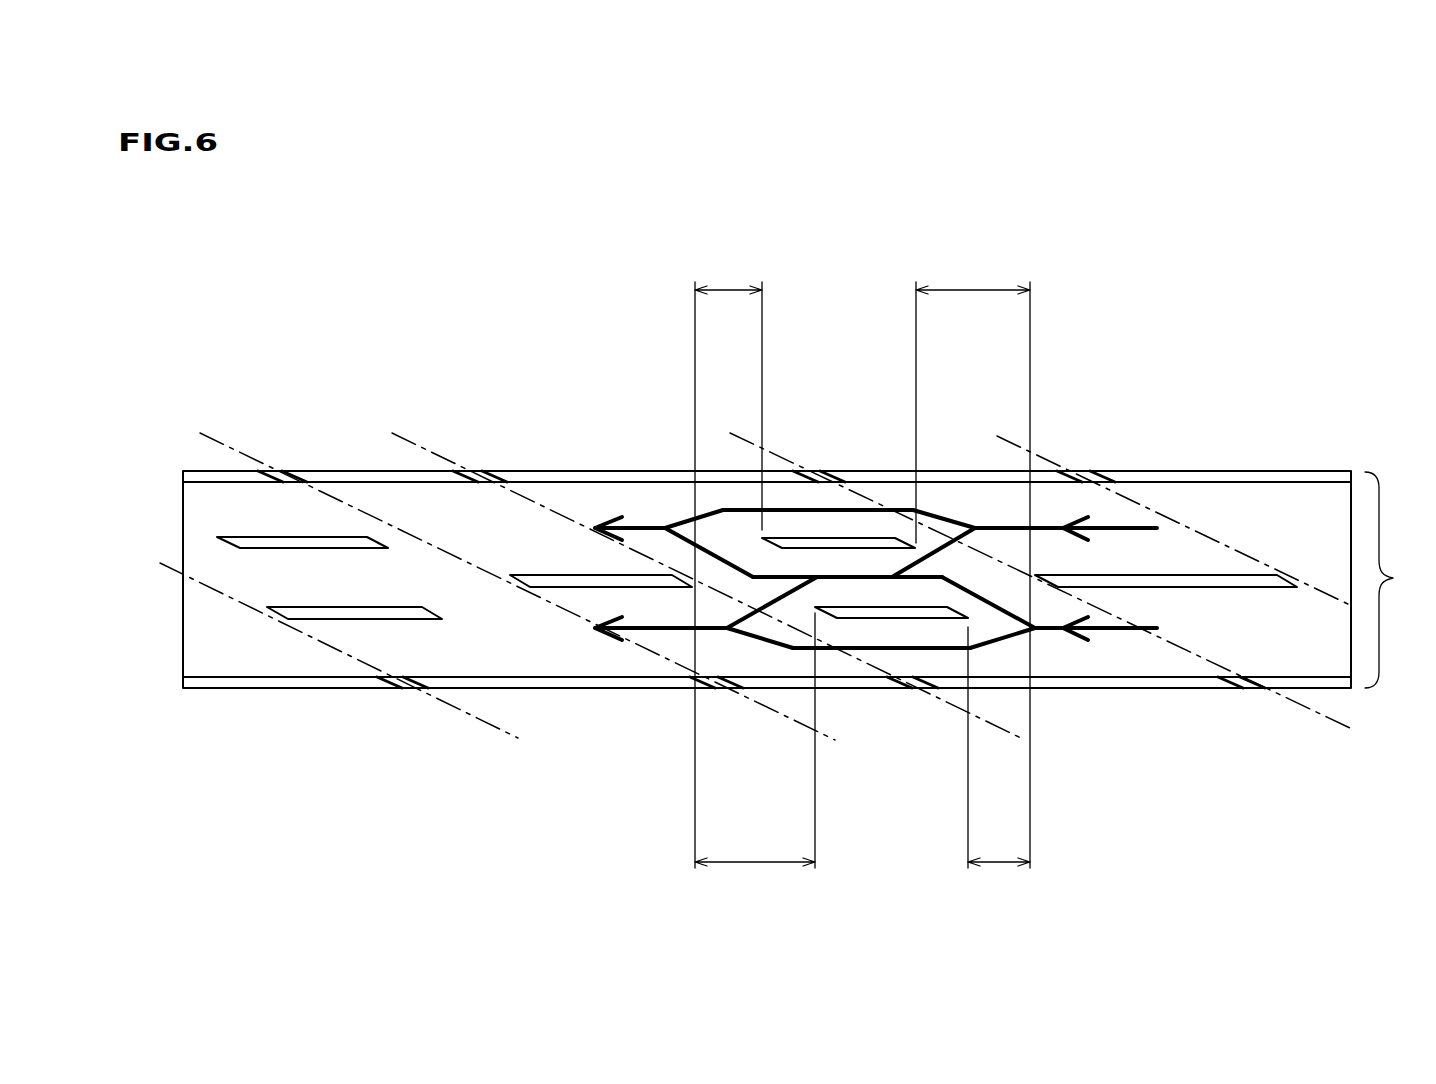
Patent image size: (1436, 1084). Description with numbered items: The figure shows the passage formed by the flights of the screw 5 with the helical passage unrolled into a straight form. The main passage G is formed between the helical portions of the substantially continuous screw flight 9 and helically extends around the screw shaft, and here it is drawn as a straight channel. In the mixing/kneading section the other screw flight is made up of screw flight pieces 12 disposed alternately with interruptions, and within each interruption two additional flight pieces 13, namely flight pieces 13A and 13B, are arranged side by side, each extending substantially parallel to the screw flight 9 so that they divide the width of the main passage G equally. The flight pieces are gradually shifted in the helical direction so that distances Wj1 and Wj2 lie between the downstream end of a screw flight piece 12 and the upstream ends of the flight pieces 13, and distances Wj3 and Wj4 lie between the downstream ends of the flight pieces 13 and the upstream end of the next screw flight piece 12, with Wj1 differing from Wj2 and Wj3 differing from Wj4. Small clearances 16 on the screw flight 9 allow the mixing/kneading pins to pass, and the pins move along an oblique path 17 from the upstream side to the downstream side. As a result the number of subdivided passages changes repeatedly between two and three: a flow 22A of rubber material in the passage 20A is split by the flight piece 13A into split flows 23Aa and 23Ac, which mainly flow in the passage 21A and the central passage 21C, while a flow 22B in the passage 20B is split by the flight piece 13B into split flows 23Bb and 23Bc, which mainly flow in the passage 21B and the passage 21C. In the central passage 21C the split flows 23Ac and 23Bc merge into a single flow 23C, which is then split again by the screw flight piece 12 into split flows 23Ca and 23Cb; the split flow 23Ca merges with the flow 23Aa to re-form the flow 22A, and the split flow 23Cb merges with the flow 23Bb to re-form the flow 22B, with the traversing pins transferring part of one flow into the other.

The screw 5 is at (1212, 360).
The screw flight 9 is at (1285, 470).
The screw flight piece 12 is at (523, 583).
The additional flight piece 13 is at (253, 545).
The flight piece 13A is at (837, 620).
The flight piece 13B is at (775, 545).
The clearance 16 is at (482, 470).
The path 17 is at (238, 450).
The passage 20A is at (1258, 651).
The passage 20B is at (1258, 532).
The passage 21A is at (881, 662).
The passage 21B is at (820, 430).
The central passage 21C is at (834, 513).
The flow 22A is at (875, 628).
The flow 22B is at (875, 528).
The split flow 23Aa is at (955, 648).
The split flow 23Ac is at (997, 603).
The split flow 23Bb is at (857, 508).
The split flow 23Bc is at (957, 552).
The single flow 23C is at (867, 577).
The split flow 23Ca is at (793, 648).
The split flow 23Cb is at (723, 563).
The main passage G is at (1391, 580).
The distance Wj1 is at (999, 762).
The distance Wj2 is at (973, 561).
The distance Wj3 is at (755, 755).
The distance Wj4 is at (728, 561).